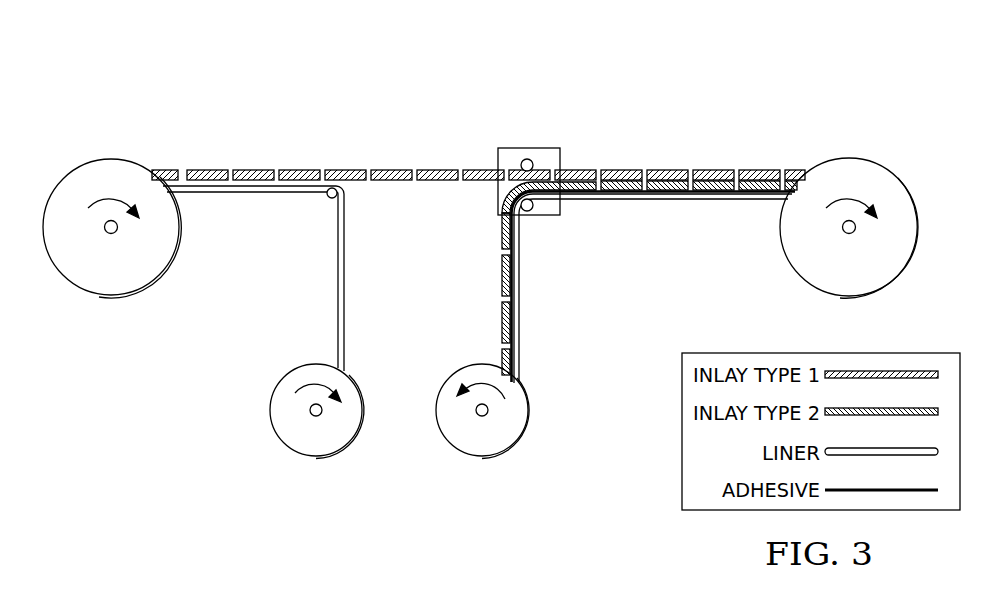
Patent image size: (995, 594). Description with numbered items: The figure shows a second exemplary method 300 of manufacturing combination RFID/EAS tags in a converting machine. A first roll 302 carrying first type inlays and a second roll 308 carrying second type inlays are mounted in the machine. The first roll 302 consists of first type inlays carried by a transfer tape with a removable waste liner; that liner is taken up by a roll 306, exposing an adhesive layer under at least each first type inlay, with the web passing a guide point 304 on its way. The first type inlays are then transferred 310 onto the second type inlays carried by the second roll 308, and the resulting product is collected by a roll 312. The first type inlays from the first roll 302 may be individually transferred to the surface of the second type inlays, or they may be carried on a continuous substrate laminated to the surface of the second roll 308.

The lamination system 300 is at (787, 67).
The first roll 302 is at (102, 160).
The guide roller 304 is at (328, 197).
The roll 306 is at (310, 455).
The second roll 308 is at (488, 456).
The transfer 310 is at (537, 147).
The roll 312 is at (853, 158).